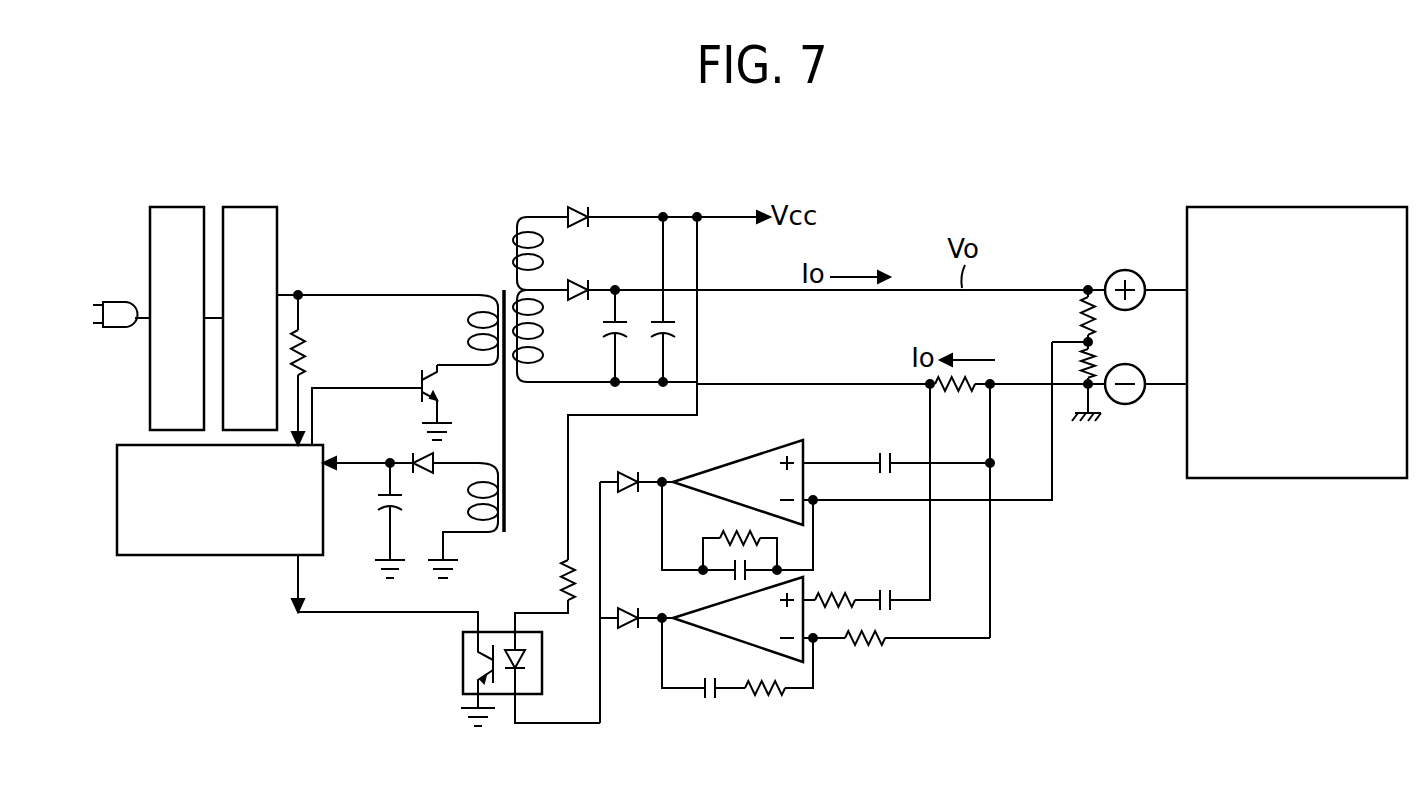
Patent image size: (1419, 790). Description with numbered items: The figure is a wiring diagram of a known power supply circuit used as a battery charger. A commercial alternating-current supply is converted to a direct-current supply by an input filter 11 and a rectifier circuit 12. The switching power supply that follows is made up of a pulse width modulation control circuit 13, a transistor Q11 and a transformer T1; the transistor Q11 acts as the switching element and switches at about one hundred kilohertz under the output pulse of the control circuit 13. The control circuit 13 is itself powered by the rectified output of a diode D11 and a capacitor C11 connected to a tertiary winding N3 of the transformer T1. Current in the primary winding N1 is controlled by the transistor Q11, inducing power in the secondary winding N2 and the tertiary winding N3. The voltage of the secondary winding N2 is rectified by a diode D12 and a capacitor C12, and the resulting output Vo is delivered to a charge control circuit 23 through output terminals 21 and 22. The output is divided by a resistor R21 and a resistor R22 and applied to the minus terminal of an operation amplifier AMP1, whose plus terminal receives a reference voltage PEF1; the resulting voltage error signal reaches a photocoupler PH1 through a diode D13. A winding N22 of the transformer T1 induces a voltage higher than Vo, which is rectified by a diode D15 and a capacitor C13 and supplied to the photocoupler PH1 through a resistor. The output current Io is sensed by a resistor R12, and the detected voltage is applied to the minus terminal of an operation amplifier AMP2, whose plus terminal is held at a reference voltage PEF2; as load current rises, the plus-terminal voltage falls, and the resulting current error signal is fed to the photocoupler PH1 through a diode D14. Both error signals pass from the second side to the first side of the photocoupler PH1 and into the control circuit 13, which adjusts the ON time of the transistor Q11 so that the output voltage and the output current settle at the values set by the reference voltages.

The input filter 11 is at (175, 206).
The rectifier circuit 12 is at (248, 206).
The pulse width modulation control circuit 13 is at (173, 557).
The output terminal 21 is at (1122, 270).
The output terminal 22 is at (1125, 405).
The charge control circuit 23 is at (1297, 207).
The transformer T1 is at (521, 346).
The primary winding N1 is at (480, 300).
The secondary winding N2 is at (524, 368).
The winding N22 is at (528, 230).
The tertiary winding N3 is at (490, 480).
The transistor Q11 is at (417, 370).
The diode D11 is at (428, 470).
The diode D12 is at (592, 290).
The diode D13 is at (630, 474).
The diode D14 is at (625, 612).
The diode D15 is at (582, 210).
The capacitor C11 is at (378, 503).
The capacitor C12 is at (600, 332).
The capacitor C13 is at (698, 330).
The resistor R12 is at (957, 392).
The resistor R21 is at (1080, 318).
The resistor R22 is at (1098, 345).
The photocoupler PH1 is at (491, 630).
The reference voltage PEF1 is at (889, 457).
The reference voltage PEF2 is at (889, 597).
The operation amplifier AMP1 is at (857, 461).
The operation amplifier AMP2 is at (826, 541).